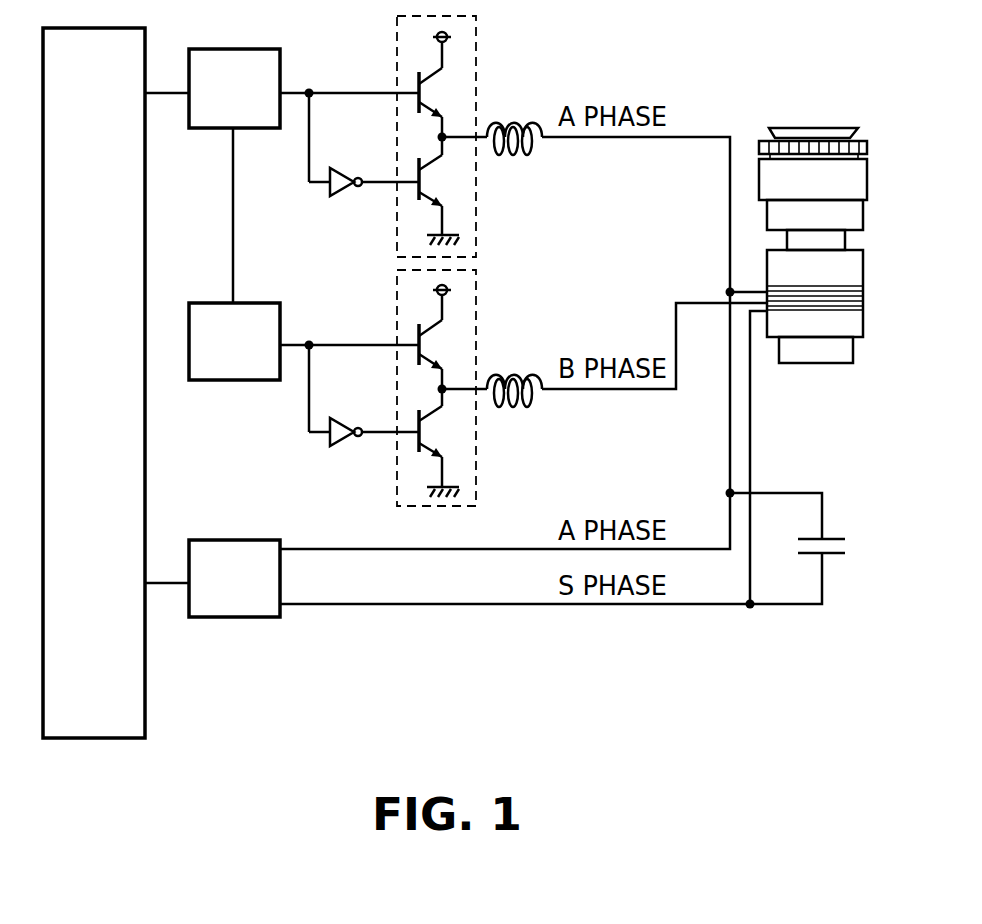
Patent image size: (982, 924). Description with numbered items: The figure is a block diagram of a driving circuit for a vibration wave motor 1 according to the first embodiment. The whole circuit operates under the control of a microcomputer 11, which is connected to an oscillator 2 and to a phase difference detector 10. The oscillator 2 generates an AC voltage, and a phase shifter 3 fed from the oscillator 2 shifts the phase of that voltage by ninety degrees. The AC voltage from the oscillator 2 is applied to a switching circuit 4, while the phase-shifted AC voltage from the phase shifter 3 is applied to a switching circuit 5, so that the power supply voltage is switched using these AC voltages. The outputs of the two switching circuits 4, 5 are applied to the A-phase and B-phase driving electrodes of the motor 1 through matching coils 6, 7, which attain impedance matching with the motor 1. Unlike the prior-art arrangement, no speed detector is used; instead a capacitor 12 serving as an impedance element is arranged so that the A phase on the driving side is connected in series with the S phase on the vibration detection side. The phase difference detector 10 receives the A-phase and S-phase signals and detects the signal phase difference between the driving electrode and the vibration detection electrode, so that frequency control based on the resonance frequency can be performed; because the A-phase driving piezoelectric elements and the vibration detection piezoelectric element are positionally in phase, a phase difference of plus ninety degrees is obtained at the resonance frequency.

The vibration wave motor 1 is at (825, 363).
The oscillator 2 is at (234, 88).
The phase shifter 3 is at (234, 341).
The switching circuit 4 is at (476, 67).
The switching circuit 5 is at (476, 318).
The matching coil 6 is at (516, 118).
The matching coil 7 is at (515, 370).
The phase difference detector 10 is at (234, 578).
The microcomputer 11 is at (94, 383).
The capacitor 12 is at (834, 562).